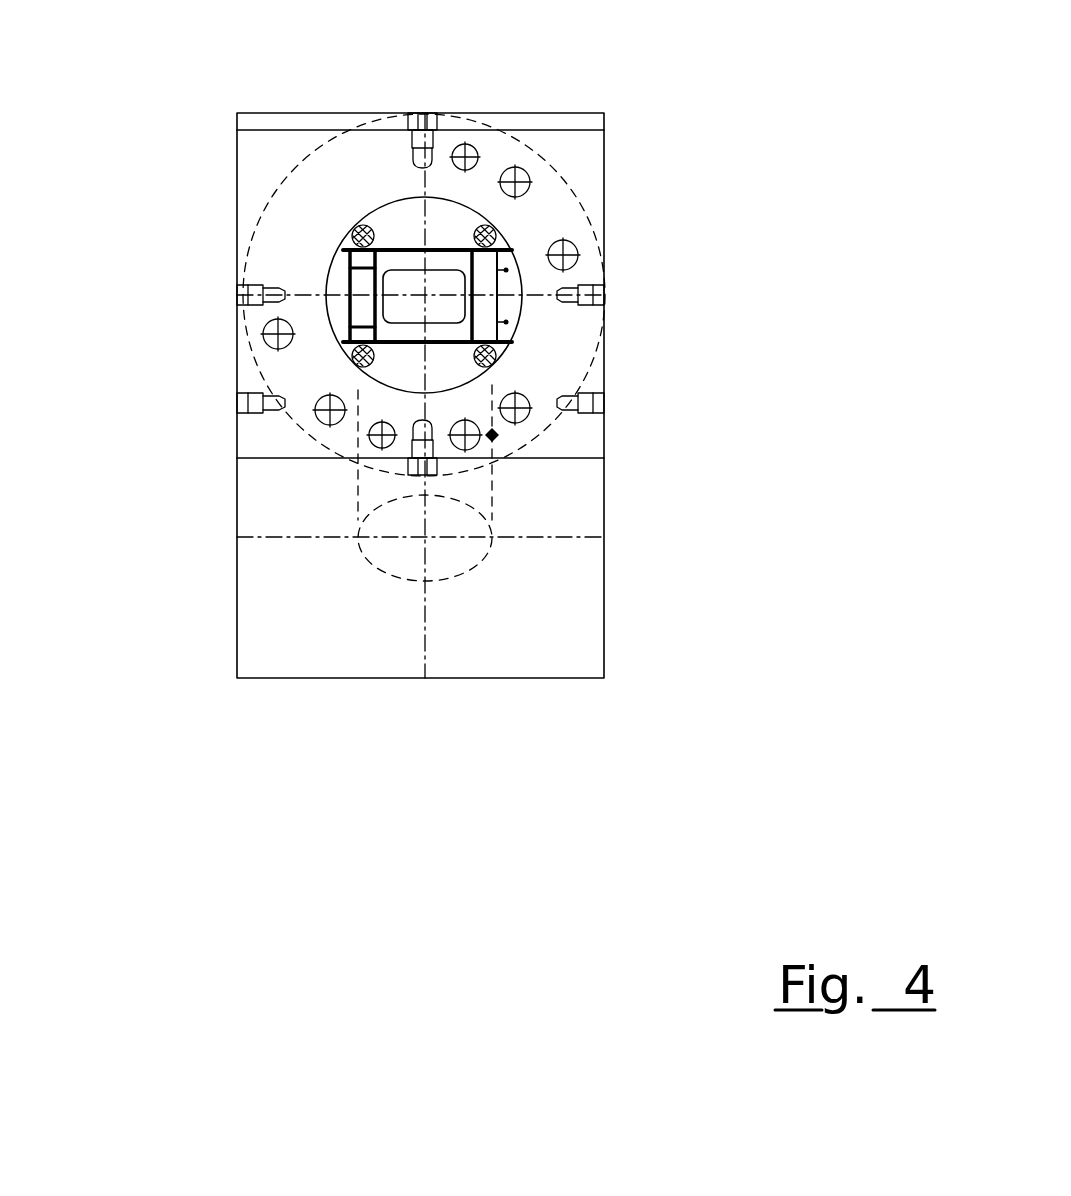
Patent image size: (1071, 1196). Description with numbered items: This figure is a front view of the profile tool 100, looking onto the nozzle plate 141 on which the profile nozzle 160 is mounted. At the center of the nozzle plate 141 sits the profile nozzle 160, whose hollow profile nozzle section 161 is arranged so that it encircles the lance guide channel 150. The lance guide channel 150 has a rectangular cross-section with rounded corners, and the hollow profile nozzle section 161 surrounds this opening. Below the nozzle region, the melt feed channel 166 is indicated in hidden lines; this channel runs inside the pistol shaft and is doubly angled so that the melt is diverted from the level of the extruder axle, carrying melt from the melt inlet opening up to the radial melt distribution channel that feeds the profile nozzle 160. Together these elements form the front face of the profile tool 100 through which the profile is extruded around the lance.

The profile tool 100 is at (762, 77).
The nozzle plate 141 is at (580, 163).
The lance guide channel 150 is at (315, 277).
The profile nozzle 160 is at (512, 310).
The hollow profile nozzle section 161 is at (398, 280).
The melt feed channel 166 is at (462, 523).